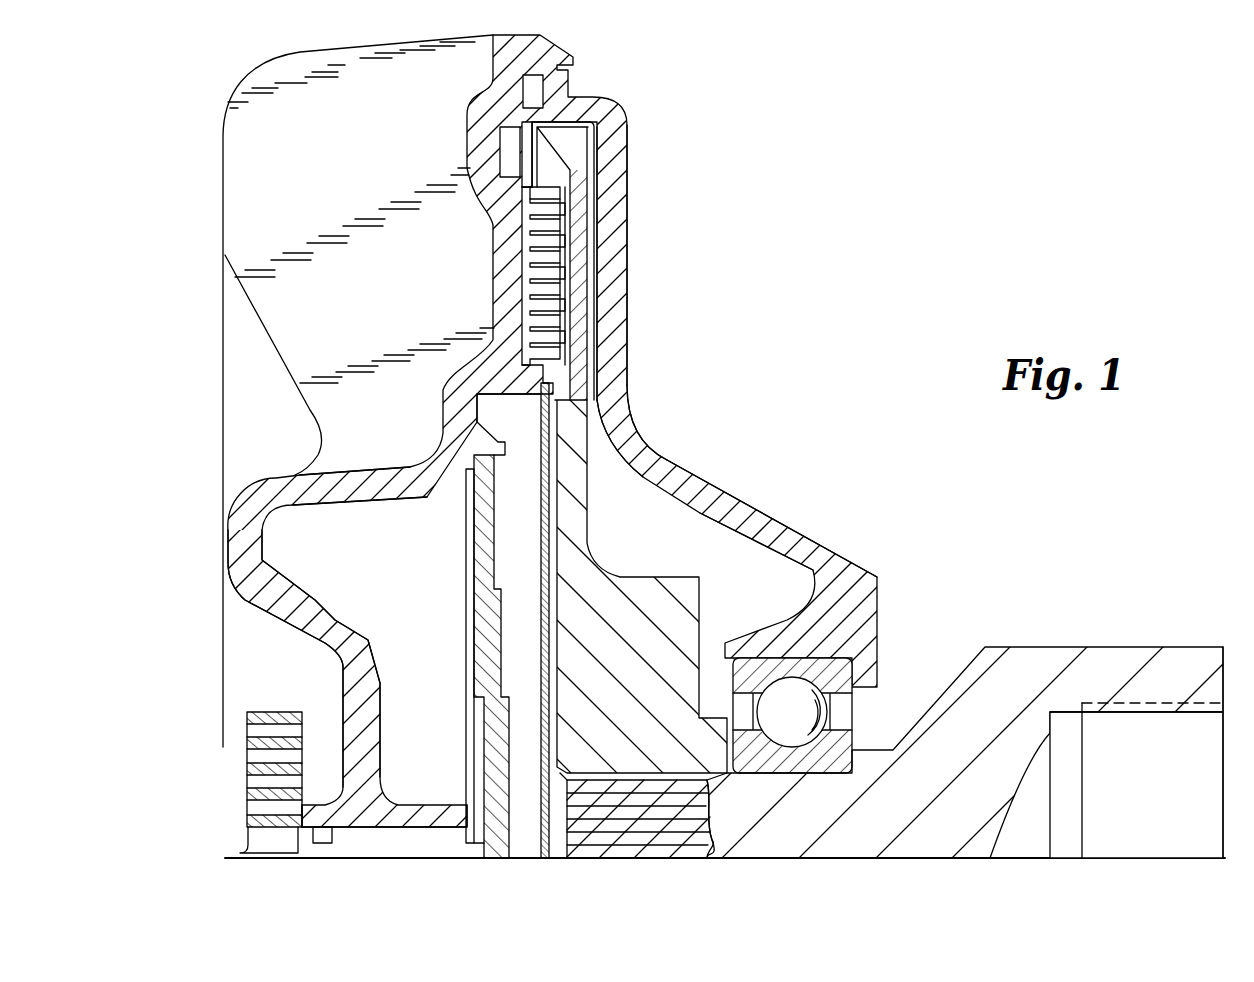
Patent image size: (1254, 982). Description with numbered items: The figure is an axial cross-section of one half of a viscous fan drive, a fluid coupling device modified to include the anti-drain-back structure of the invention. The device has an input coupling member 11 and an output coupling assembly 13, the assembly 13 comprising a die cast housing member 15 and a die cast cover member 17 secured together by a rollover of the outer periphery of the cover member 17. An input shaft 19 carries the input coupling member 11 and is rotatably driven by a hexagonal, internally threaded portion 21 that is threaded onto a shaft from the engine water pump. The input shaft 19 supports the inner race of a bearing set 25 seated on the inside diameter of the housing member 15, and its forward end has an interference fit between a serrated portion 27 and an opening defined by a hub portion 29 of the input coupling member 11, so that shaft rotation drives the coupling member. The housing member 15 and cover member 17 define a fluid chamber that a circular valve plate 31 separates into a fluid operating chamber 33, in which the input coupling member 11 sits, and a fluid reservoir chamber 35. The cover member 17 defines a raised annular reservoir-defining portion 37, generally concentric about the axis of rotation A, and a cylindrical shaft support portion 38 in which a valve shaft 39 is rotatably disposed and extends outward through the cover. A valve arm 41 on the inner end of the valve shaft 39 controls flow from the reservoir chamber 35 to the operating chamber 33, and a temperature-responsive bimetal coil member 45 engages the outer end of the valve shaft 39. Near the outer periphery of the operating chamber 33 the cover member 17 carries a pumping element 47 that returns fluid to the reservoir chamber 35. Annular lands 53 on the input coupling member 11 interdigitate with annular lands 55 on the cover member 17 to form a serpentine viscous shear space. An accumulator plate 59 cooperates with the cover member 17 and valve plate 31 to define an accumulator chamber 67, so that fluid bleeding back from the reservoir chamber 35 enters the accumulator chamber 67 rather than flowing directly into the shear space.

The input coupling member 11 is at (596, 478).
The output coupling assembly 13 is at (588, 82).
The housing member 15 is at (610, 243).
The cover member 17 is at (507, 276).
The input shaft 19 is at (737, 823).
The internally threaded portion 21 is at (1170, 670).
The bearing set 25 is at (872, 717).
The serrated portion 27 is at (660, 813).
The hub portion 29 is at (675, 623).
The valve plate 31 is at (457, 656).
The fluid operating chamber 33 is at (638, 522).
The fluid reservoir chamber 35 is at (371, 553).
The reservoir-defining portion 37 is at (237, 515).
The shaft support portion 38 is at (423, 813).
The valve shaft 39 is at (343, 845).
The valve arm 41 is at (470, 710).
The coil member 45 is at (277, 708).
The pumping element 47 is at (503, 152).
The annular lands 53 is at (530, 300).
The annular lands 55 is at (585, 318).
The accumulator plate 59 is at (530, 815).
The accumulator chamber 67 is at (477, 607).
The axis of rotation A is at (370, 860).